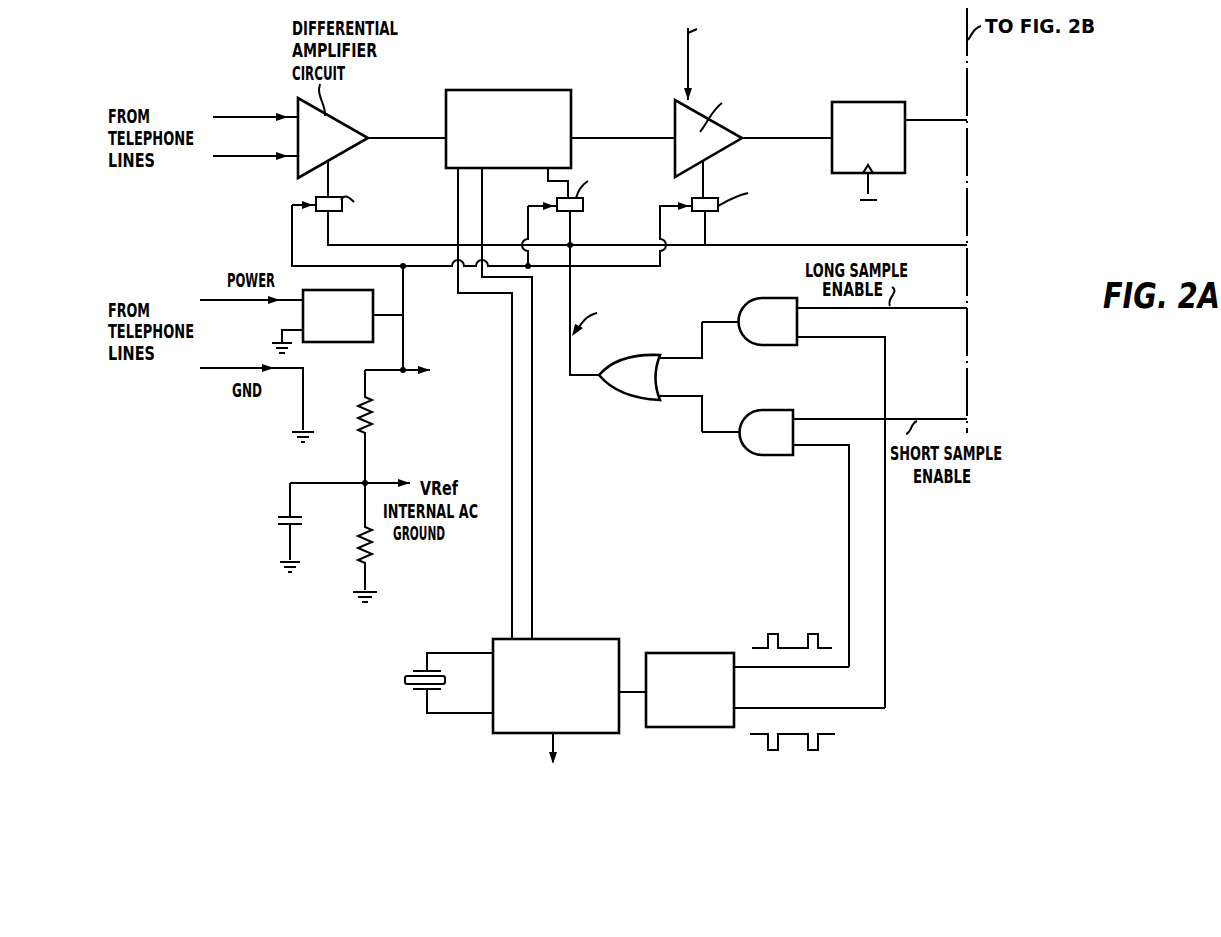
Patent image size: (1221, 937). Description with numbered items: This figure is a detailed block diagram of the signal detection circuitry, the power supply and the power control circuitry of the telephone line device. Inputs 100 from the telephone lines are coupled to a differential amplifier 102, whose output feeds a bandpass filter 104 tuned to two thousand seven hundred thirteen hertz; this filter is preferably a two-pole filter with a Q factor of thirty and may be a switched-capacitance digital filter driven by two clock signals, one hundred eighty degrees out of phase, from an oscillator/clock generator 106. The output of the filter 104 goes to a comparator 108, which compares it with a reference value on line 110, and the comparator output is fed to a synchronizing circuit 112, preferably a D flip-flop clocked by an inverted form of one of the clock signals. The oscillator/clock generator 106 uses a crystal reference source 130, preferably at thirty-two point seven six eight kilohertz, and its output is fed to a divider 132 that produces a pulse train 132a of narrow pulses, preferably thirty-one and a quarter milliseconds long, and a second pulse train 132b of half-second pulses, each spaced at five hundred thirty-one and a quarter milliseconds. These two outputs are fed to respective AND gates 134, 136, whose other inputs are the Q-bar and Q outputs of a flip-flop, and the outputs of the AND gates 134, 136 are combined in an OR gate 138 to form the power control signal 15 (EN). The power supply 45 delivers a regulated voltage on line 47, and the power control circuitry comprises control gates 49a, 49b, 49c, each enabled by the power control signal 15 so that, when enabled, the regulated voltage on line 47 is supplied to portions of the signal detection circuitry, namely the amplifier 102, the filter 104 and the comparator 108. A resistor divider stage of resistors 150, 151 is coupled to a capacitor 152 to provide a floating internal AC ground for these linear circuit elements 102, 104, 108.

The inputs 100 is at (229, 160).
The differential amplifier 102 is at (340, 122).
The bandpass filter 104 is at (549, 58).
The oscillator/clock generator 106 is at (586, 640).
The comparator 108 is at (675, 117).
The line 110 is at (688, 68).
The synchronizing circuit 112 is at (872, 106).
The crystal reference source 130 is at (405, 684).
The divider 132 is at (683, 653).
The pulse train 132a is at (838, 666).
The second pulse train 132b is at (858, 712).
The AND gate 134 is at (775, 447).
The AND gate 136 is at (777, 338).
The OR gate 138 is at (628, 392).
The power control signal 15 is at (580, 377).
The power supply 45 is at (343, 343).
The line 47 is at (408, 350).
The control gate 49a is at (316, 207).
The control gate 49b is at (557, 198).
The control gate 49c is at (698, 213).
The resistor 150 is at (376, 424).
The resistor 151 is at (380, 548).
The capacitor 152 is at (280, 519).